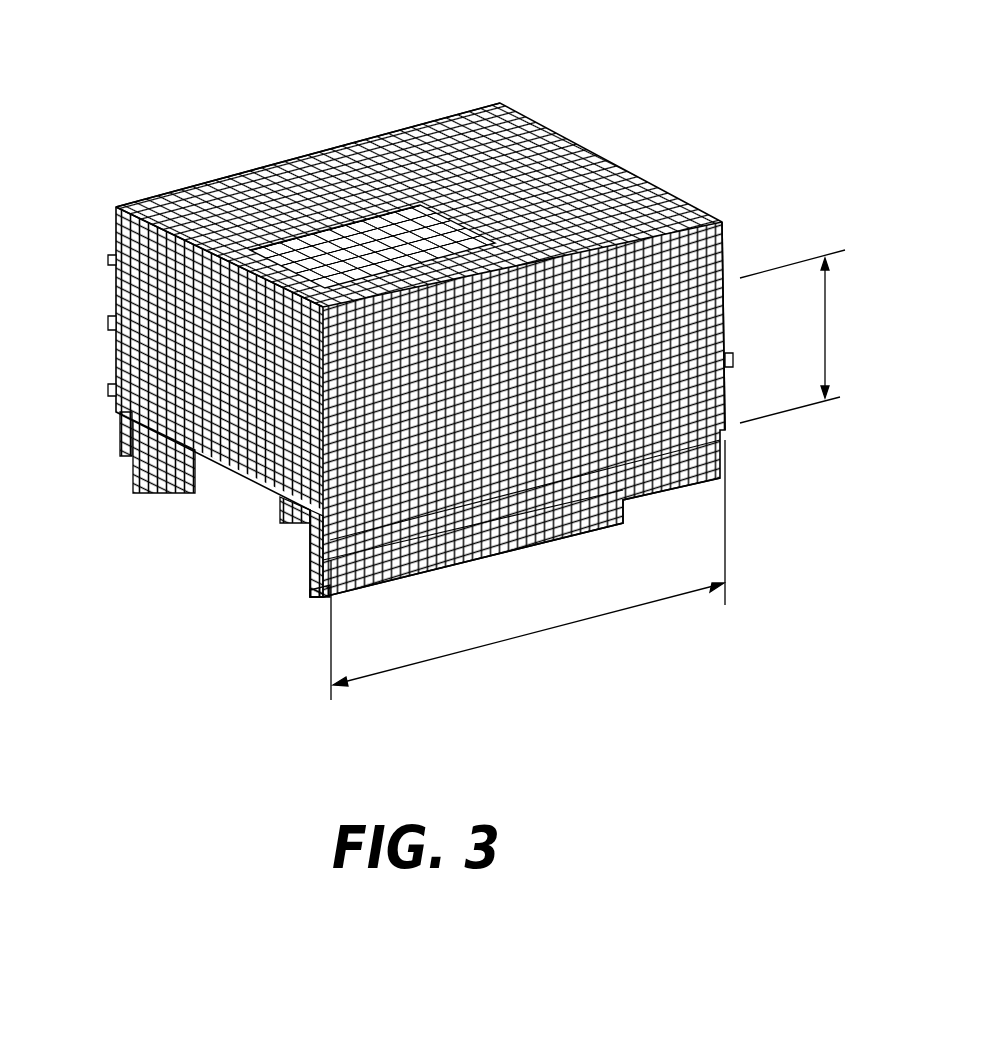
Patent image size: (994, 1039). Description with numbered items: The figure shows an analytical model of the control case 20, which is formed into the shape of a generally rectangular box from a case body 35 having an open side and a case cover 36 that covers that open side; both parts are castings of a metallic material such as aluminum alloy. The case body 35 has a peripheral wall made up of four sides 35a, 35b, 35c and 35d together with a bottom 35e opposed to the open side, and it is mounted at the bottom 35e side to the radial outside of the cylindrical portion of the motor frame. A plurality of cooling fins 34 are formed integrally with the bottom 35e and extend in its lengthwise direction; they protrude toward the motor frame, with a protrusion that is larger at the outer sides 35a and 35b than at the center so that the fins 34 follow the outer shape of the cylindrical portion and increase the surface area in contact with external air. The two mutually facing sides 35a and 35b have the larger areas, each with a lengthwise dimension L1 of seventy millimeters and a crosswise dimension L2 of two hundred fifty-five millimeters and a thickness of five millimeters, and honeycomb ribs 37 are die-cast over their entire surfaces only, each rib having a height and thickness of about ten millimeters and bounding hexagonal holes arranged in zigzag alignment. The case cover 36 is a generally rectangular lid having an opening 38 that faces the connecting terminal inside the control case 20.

The control case 20 is at (623, 153).
The cooling fins 34 is at (135, 475).
The case body 35 is at (112, 358).
The side 35a is at (598, 480).
The side 35b is at (112, 283).
The side 35c is at (228, 470).
The side 35d is at (727, 313).
The bottom 35e is at (267, 487).
The case cover 36 is at (525, 118).
The honeycomb ribs 37 is at (110, 325).
The opening 38 is at (307, 155).
The lengthwise dimension L1 is at (795, 336).
The crosswise dimension L2 is at (528, 570).